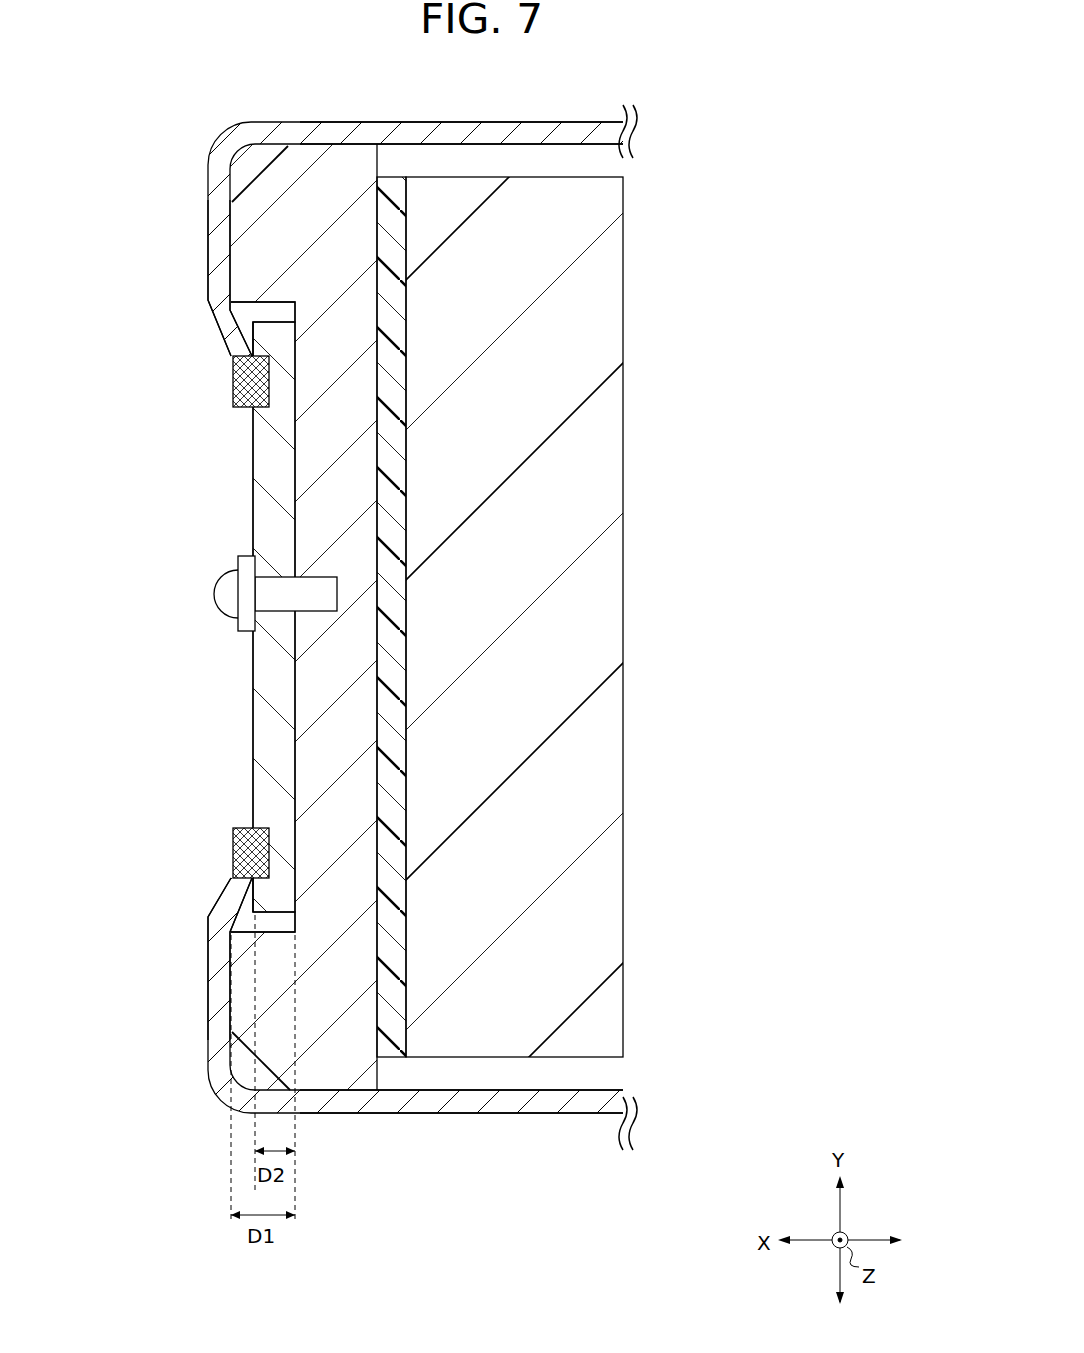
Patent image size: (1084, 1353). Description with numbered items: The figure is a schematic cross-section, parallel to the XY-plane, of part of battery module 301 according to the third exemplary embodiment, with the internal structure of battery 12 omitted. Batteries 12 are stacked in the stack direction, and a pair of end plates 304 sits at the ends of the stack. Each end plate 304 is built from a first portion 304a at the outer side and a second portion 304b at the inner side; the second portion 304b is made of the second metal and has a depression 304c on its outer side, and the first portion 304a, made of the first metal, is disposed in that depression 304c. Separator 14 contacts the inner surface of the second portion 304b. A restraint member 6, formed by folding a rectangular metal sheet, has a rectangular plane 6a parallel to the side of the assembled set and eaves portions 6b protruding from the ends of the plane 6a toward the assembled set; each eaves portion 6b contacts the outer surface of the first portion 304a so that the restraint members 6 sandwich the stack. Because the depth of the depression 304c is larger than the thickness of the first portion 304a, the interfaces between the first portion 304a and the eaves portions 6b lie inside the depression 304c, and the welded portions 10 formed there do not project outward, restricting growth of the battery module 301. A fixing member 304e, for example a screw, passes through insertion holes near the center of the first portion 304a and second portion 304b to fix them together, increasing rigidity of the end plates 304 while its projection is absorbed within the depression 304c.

The restraint member 6 is at (218, 140).
The plane 6a is at (470, 122).
The eaves portion 6b is at (208, 265).
The welded portion 10 is at (233, 383).
The battery 12 is at (623, 850).
The separator 14 is at (395, 1060).
The battery module 301 is at (400, 671).
The end plate 304 is at (244, 518).
The first portion 304a is at (268, 480).
The second portion 304b is at (312, 440).
The depression 304c is at (243, 317).
The fixing member 304e is at (213, 580).